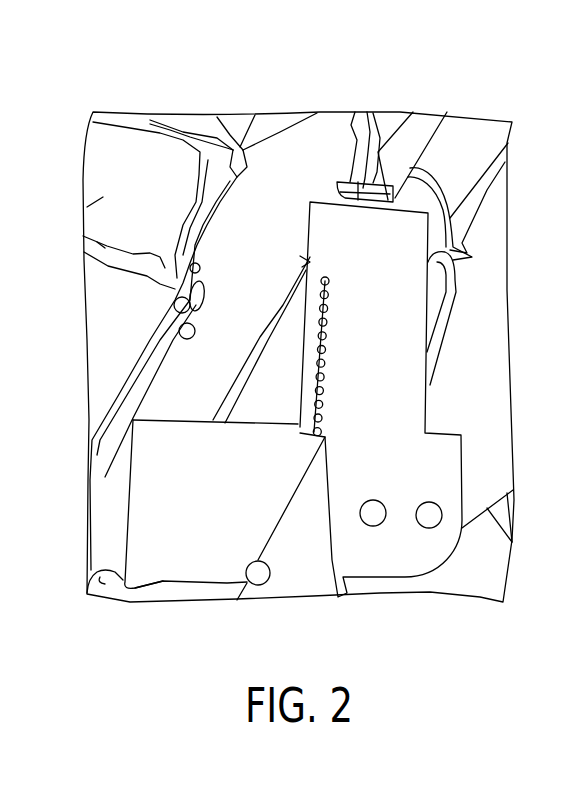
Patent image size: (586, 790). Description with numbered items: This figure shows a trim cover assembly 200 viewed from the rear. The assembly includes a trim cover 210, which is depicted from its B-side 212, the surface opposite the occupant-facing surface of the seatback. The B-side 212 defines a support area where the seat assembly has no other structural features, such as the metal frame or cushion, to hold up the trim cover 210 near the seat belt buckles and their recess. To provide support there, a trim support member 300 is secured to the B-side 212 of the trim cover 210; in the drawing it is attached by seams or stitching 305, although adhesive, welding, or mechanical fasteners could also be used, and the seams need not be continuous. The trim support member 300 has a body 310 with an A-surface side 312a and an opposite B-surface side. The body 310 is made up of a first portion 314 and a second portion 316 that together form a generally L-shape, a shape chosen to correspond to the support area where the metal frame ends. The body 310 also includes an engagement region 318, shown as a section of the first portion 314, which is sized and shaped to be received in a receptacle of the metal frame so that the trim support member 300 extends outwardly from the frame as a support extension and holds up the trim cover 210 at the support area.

The trim cover assembly 200 is at (320, 110).
The trim cover 210 is at (460, 159).
The B-side 212 is at (256, 329).
The trim support member 300 is at (460, 291).
The stitching 305 is at (431, 399).
The body 310 is at (425, 477).
The A-surface side 312a is at (266, 492).
The first portion 314 is at (392, 337).
The second portion 316 is at (180, 453).
The engagement region 318 is at (351, 270).